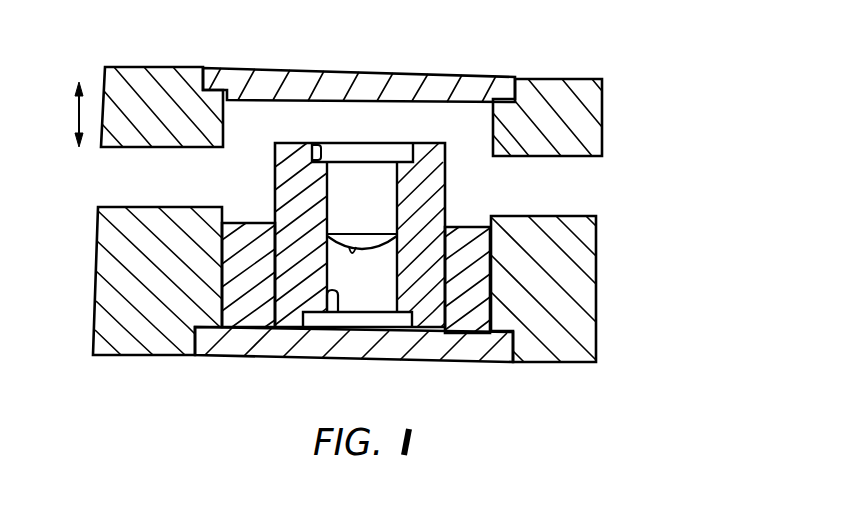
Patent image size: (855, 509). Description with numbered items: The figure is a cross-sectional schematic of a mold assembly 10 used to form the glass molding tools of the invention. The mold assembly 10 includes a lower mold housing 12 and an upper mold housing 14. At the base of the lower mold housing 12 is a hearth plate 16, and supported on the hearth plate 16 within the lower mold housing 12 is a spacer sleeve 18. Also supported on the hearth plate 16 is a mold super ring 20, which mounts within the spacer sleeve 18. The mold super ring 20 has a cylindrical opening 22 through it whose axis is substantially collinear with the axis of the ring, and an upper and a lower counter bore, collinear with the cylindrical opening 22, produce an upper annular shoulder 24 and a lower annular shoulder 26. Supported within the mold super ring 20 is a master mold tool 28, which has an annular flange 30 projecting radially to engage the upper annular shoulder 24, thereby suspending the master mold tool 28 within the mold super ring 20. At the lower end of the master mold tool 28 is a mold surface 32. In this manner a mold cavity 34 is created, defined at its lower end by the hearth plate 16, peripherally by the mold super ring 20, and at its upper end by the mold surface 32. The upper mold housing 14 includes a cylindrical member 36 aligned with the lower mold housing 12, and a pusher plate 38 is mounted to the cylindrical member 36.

The mold assembly 10 is at (638, 79).
The lower mold housing 12 is at (597, 277).
The upper mold housing 14 is at (128, 67).
The hearth plate 16 is at (480, 360).
The spacer sleeve 18 is at (469, 226).
The mold super ring 20 is at (272, 183).
The cylindrical opening 22 is at (333, 300).
The upper annular shoulder 24 is at (318, 143).
The lower annular shoulder 26 is at (398, 314).
The master mold tool 28 is at (382, 194).
The annular flange 30 is at (400, 150).
The mold surface 32 is at (353, 242).
The mold cavity 34 is at (381, 301).
The cylindrical member 36 is at (603, 143).
The pusher plate 38 is at (395, 75).